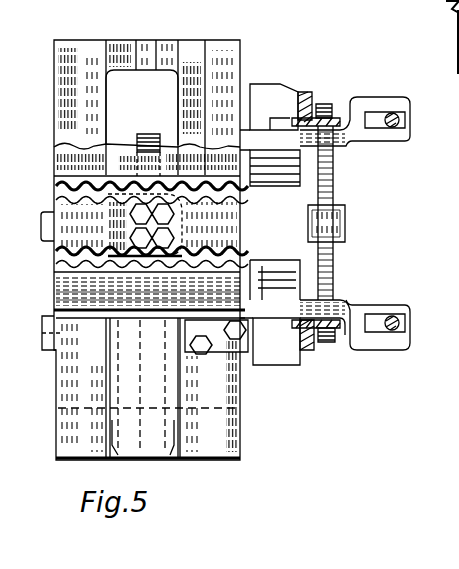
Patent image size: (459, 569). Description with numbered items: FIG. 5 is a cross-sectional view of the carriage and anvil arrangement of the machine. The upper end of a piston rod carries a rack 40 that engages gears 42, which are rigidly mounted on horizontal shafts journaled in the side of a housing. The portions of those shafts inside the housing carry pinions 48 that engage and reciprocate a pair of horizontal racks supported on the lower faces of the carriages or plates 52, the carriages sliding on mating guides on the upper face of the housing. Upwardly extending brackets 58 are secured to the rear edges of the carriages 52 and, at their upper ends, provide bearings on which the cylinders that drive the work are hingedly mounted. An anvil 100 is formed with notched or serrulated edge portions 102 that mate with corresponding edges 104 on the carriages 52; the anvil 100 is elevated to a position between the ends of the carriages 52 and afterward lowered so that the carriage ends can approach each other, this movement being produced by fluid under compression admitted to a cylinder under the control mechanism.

The carriage 52 is at (62, 161).
The edges of the carriages 104 is at (74, 190).
The notched or serrulated edge portions 102 is at (70, 203).
The anvil 100 is at (76, 252).
The pinion 48 is at (153, 133).
The bracket 58 is at (308, 96).
The gear 42 is at (335, 178).
The rack 40 is at (345, 222).